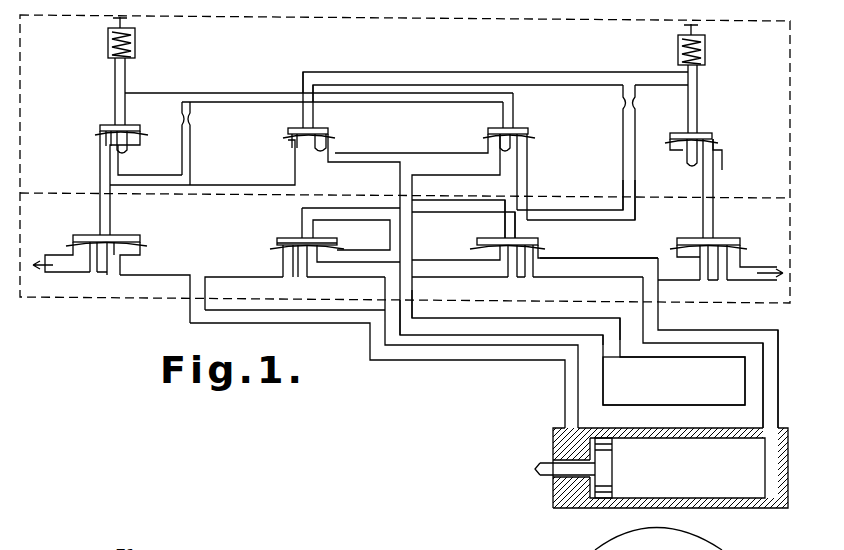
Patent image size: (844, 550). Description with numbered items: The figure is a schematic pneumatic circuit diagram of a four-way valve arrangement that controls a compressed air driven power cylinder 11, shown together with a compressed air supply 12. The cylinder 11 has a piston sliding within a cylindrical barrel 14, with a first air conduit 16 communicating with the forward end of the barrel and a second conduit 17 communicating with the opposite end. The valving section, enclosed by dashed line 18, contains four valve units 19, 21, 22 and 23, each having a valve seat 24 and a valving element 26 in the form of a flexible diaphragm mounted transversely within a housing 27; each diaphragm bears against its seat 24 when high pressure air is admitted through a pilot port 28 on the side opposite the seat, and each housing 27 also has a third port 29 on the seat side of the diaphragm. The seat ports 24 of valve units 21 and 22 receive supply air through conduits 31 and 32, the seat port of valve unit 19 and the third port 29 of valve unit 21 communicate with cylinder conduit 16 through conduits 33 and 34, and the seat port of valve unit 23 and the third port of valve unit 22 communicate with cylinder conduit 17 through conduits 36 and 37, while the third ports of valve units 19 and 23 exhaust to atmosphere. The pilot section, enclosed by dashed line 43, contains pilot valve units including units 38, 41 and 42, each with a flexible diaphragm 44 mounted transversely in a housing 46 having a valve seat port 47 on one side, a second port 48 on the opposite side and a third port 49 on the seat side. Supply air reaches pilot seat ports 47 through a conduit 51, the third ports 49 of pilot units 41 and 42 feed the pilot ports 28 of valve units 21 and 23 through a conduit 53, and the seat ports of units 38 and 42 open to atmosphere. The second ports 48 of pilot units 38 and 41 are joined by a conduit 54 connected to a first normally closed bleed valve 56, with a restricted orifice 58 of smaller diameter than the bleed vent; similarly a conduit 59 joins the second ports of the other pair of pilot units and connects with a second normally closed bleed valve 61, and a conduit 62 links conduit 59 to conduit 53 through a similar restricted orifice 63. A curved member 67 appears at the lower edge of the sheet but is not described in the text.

The cylinder 11 is at (546, 435).
The compressed air supply 12 is at (670, 405).
The cylindrical barrel 14 is at (718, 430).
The first air conduit 16 is at (190, 315).
The second conduit 17 is at (765, 330).
The dashed line enclosing valving section 18 is at (76, 300).
The valve unit 19 is at (139, 219).
The valve unit 21 is at (297, 216).
The valve unit 22 is at (546, 253).
The valve unit 23 is at (680, 241).
The valve seat 24 is at (109, 266).
The valving element 26 is at (73, 240).
The housing 27 is at (140, 240).
The pilot port 28 is at (100, 197).
The third port 29 is at (90, 252).
The conduit 31 is at (365, 280).
The conduit 32 is at (432, 278).
The conduit 33 is at (158, 277).
The conduit 34 is at (277, 244).
The conduit 36 is at (660, 310).
The conduit 37 is at (625, 280).
The pilot valve unit 38 is at (86, 110).
The pilot valve unit 41 is at (522, 110).
The pilot valve unit 42 is at (711, 118).
The dashed line enclosing pilot section 43 is at (76, 16).
The flexible diaphragm 44 is at (95, 135).
The housing 46 is at (100, 127).
The valve seat port 47 is at (123, 152).
The second port 48 is at (116, 75).
The third port 49 is at (104, 148).
The conduit 51 is at (413, 204).
The conduit 53 is at (597, 222).
The conduit 54 is at (260, 92).
The first normally closed bleed valve 56 is at (108, 50).
The restricted orifice 58 is at (181, 118).
The conduit 59 is at (458, 72).
The second normally closed bleed valve 61 is at (678, 46).
The conduit 62 is at (636, 185).
The restricted orifice 63 is at (624, 104).
The arc member 67 is at (718, 547).